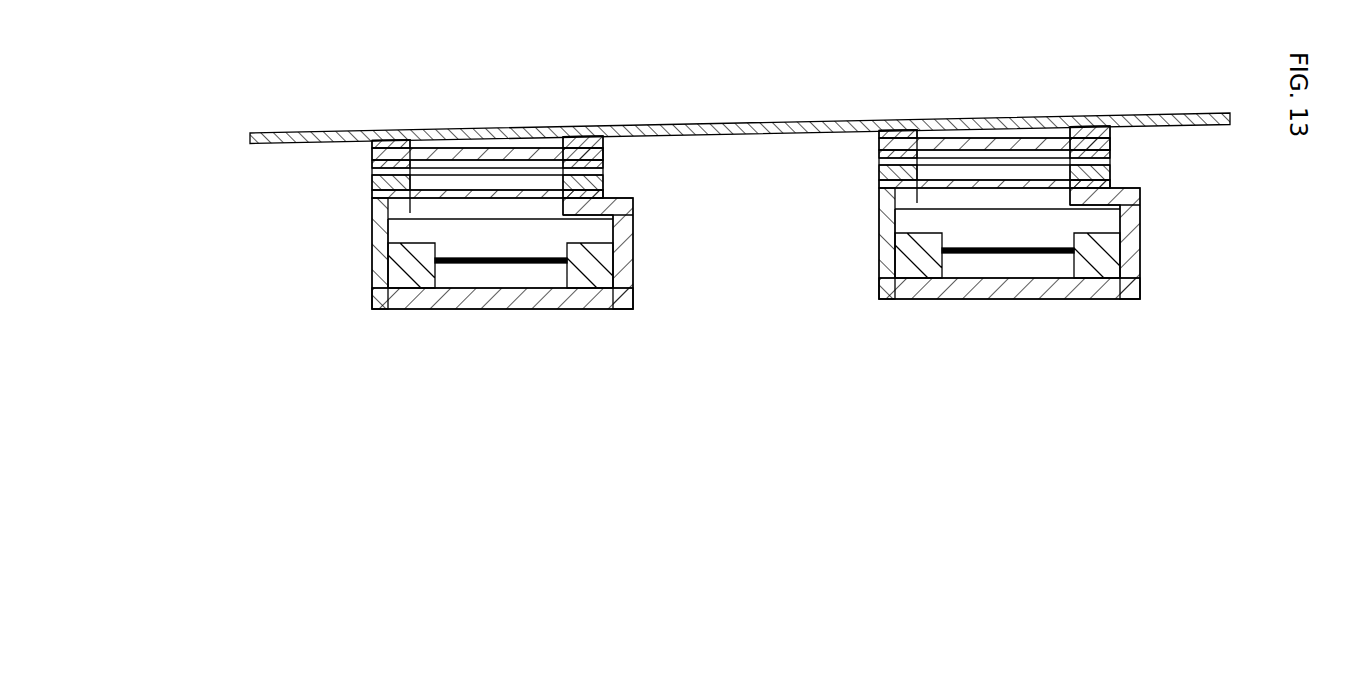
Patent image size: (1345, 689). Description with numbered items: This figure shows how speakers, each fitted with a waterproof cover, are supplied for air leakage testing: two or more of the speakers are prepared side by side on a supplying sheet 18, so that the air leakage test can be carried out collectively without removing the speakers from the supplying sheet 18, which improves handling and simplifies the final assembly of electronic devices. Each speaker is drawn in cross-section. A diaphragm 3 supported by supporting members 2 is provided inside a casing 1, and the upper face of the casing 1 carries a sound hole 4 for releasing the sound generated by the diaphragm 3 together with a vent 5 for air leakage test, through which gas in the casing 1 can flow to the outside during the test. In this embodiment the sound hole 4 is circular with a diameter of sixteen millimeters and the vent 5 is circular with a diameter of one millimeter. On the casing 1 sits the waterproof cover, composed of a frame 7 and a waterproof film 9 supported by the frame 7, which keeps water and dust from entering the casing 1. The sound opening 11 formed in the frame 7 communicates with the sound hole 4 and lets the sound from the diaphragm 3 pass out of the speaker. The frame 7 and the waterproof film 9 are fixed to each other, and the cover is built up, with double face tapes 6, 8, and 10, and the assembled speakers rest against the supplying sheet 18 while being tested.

The casing 1 is at (623, 270).
The supporting member 2 is at (587, 277).
The diaphragm 3 is at (490, 263).
The sound hole 4 is at (440, 207).
The vent for air leakage test 5 is at (623, 223).
The double face tape 6 is at (603, 193).
The frame 7 is at (603, 175).
The double face tape 8 is at (603, 157).
The waterproof film 9 is at (591, 146).
The double face tape 10 is at (573, 136).
The sound opening 11 is at (473, 176).
The supplying sheet 18 is at (1226, 113).